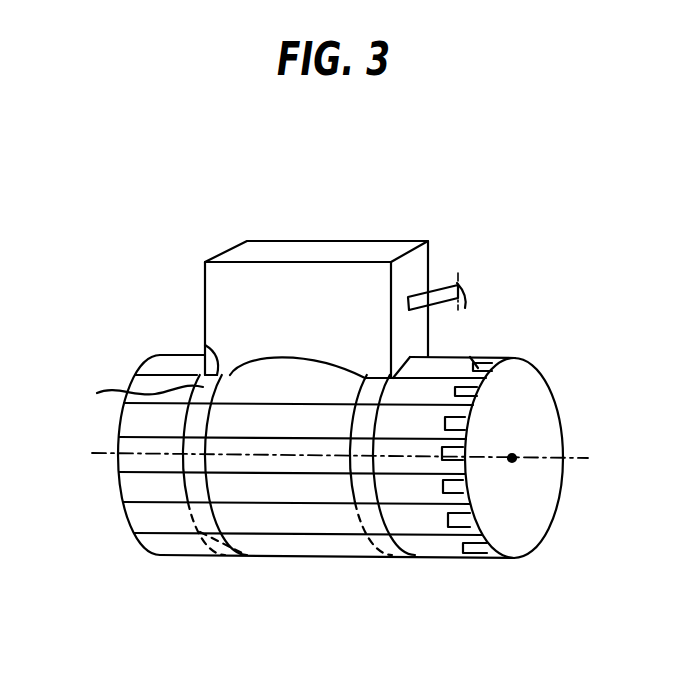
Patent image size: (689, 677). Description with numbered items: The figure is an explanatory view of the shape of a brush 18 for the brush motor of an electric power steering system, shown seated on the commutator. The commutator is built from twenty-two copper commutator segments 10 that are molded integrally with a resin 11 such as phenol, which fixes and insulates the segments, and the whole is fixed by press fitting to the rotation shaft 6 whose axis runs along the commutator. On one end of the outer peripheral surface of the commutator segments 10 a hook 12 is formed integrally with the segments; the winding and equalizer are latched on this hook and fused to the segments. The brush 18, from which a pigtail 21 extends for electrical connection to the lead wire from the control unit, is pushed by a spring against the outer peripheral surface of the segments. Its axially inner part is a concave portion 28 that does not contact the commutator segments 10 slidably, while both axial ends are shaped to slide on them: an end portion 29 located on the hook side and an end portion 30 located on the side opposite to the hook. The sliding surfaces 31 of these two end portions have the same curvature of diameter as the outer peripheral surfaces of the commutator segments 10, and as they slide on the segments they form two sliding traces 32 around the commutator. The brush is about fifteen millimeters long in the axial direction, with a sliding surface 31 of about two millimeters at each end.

The rotation shaft 6 is at (512, 458).
The commutator segments 10 is at (173, 548).
The resin 11 is at (513, 520).
The hook 12 is at (477, 553).
The brush 18 is at (368, 248).
The pigtail 21 is at (437, 288).
The concave portion 28 is at (290, 358).
The end portion 29 is at (395, 372).
The end portion 30 is at (203, 343).
The sliding surfaces 31 is at (540, 329).
The sliding traces 32 is at (222, 553).